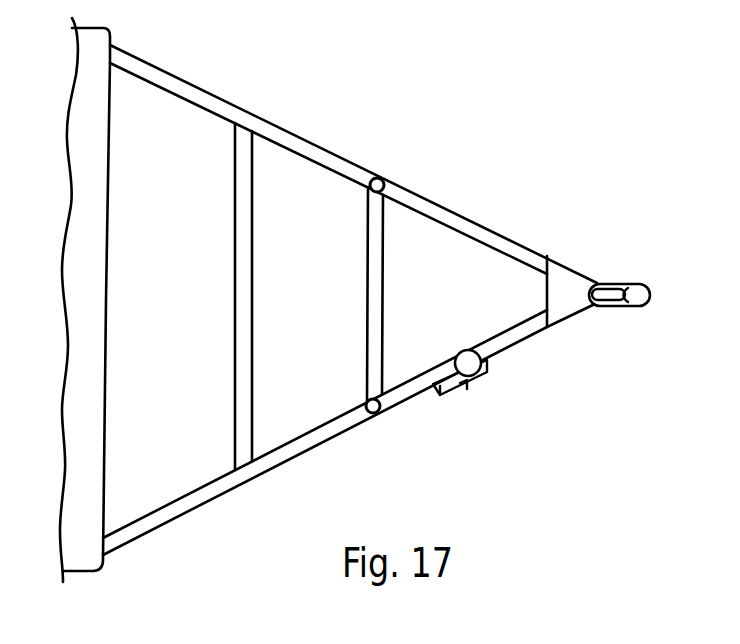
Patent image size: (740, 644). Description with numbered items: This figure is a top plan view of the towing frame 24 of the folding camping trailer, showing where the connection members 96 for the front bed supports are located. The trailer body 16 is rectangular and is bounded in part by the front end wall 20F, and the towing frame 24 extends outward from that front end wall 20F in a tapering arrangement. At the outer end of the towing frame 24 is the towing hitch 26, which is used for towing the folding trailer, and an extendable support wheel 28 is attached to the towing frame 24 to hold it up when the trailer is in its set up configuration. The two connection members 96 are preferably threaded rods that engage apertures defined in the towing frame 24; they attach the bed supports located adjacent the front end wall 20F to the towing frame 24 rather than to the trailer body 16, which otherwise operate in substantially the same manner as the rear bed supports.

The trailer body 16 is at (90, 418).
The front end wall 20F is at (350, 300).
The towing frame 24 is at (501, 199).
The towing hitch 26 is at (654, 283).
The extendable support wheel 28 is at (473, 377).
The connection member 96 is at (378, 178).